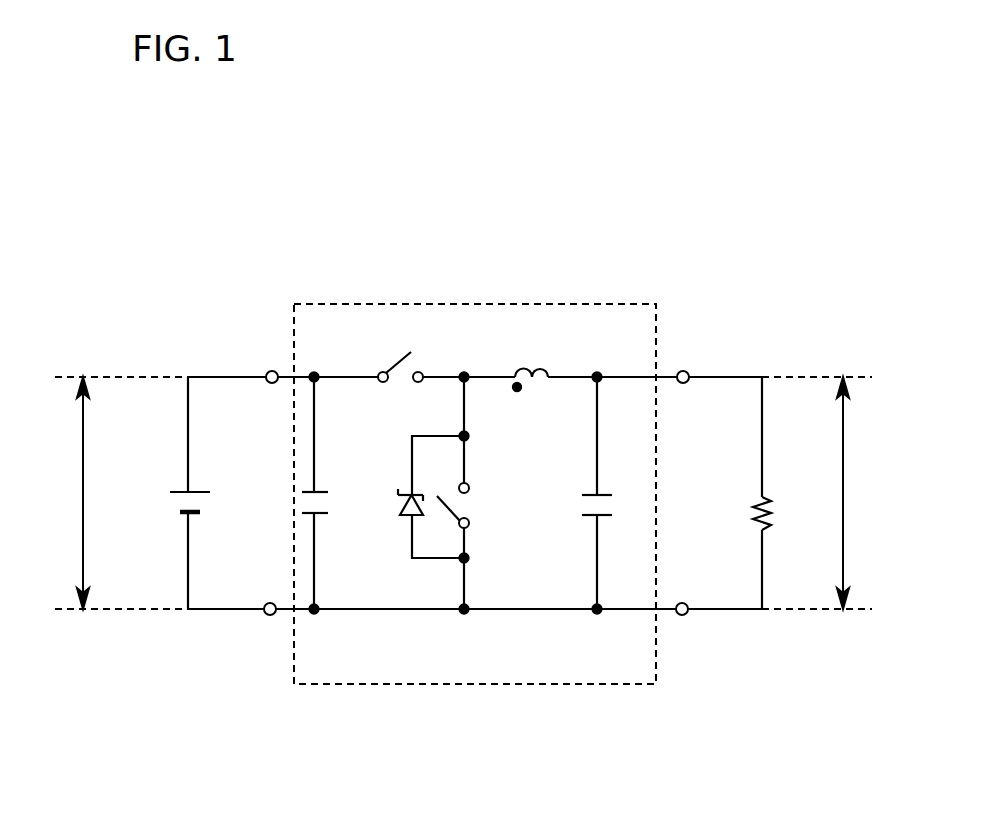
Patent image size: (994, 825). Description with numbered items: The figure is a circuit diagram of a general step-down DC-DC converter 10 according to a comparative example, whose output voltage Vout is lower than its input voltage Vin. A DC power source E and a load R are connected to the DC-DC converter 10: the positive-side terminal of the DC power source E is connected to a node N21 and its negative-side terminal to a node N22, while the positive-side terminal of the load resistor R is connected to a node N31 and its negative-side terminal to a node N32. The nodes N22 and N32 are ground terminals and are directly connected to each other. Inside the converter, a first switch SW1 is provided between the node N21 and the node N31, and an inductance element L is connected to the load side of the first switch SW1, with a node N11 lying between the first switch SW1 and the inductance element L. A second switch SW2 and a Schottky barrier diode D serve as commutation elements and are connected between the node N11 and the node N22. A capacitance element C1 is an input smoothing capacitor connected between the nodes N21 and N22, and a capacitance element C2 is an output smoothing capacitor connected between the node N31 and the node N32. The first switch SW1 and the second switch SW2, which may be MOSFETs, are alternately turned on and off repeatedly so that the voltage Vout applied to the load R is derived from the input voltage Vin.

The DC-DC converter 10 is at (608, 305).
The node N11 is at (464, 372).
The node N21 is at (272, 371).
The node N22 is at (270, 615).
The node N31 is at (683, 371).
The node N32 is at (682, 615).
The DC power source E is at (200, 493).
The capacitance element C1 is at (331, 493).
The capacitance element C2 is at (614, 493).
The first switch SW1 is at (400, 382).
The second switch SW2 is at (476, 495).
The Schottky barrier diode D is at (423, 497).
The inductance element L is at (550, 362).
The load R is at (774, 493).
The input voltage Vin is at (61, 493).
The output voltage Vout is at (873, 493).